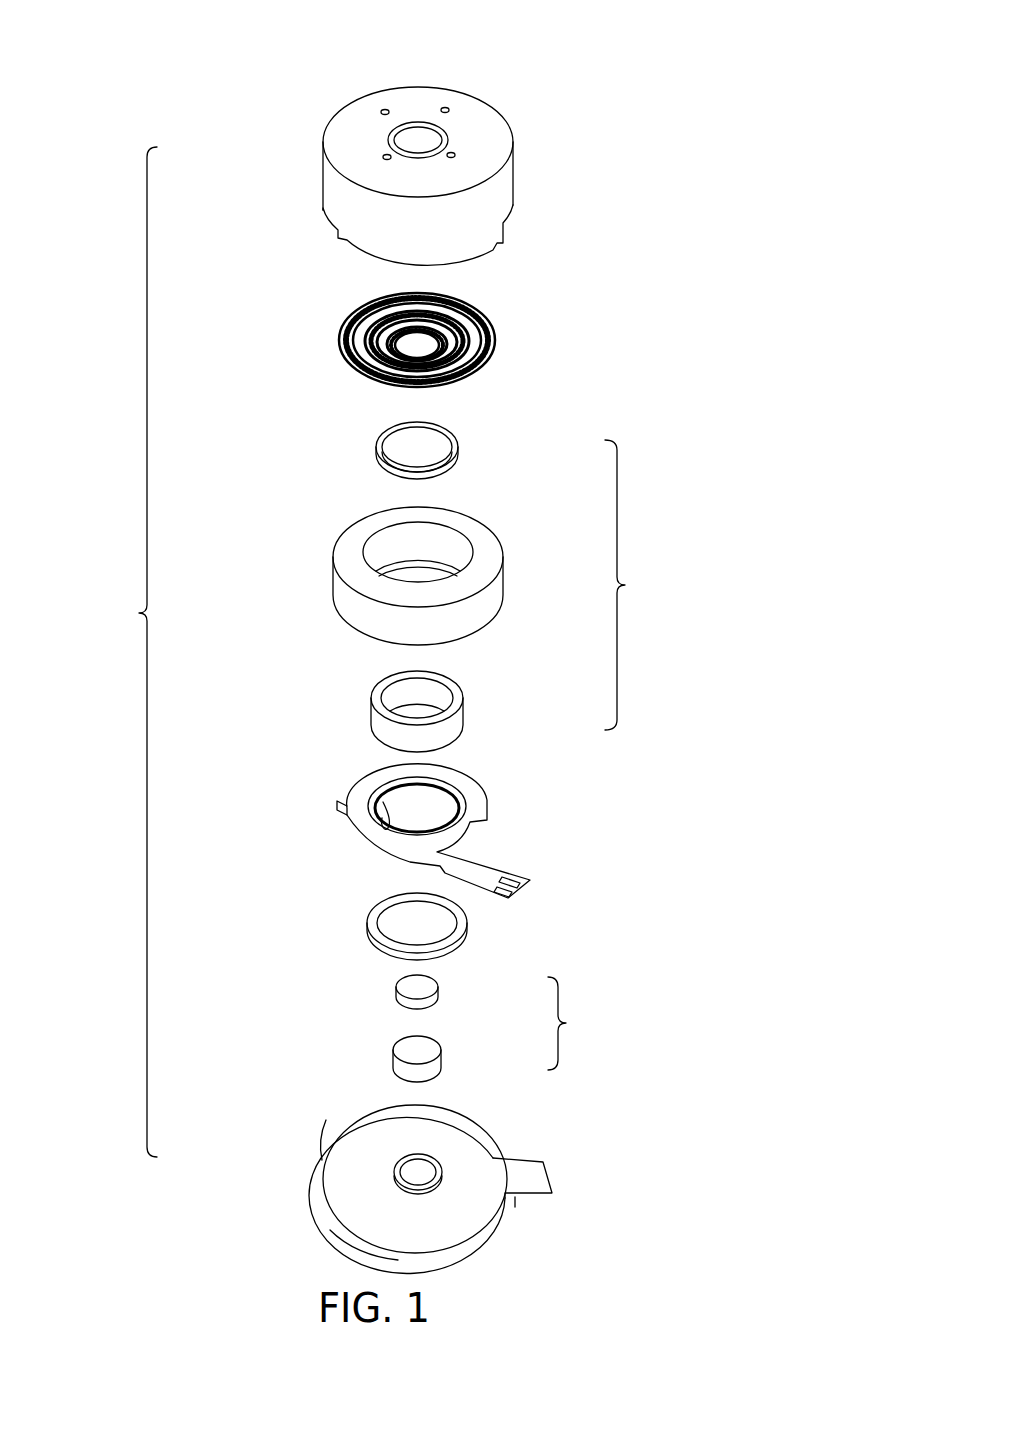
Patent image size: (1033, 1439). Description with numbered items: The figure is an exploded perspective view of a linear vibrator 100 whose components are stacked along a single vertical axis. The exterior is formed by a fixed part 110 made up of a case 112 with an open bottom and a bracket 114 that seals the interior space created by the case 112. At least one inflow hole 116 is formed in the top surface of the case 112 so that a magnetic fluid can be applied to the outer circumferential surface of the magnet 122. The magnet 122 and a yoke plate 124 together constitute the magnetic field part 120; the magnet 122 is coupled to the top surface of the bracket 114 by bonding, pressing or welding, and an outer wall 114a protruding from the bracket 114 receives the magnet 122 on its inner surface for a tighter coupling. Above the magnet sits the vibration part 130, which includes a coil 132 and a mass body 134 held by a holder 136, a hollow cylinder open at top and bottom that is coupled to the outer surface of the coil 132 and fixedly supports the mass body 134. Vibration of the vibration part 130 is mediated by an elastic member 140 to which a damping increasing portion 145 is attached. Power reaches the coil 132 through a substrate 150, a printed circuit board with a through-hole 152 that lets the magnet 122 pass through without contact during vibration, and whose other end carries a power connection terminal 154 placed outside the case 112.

The linear vibrator 100 is at (201, 31).
The fixed part 110 is at (126, 652).
The case 112 is at (332, 176).
The bracket 114 is at (404, 1189).
The outer wall 114a is at (440, 1162).
The inflow hole 116 is at (447, 107).
The magnetic field part 120 is at (504, 1028).
The magnet 122 is at (445, 1058).
The yoke plate 124 is at (440, 989).
The vibration part 130 is at (503, 587).
The coil 132 is at (463, 716).
The mass body 134 is at (500, 590).
The holder 136 is at (458, 440).
The elastic member 140 is at (471, 302).
The damping increasing portion 145 is at (463, 308).
The substrate 150 is at (454, 831).
The through-hole 152 is at (385, 825).
The power connection terminal 154 is at (522, 893).